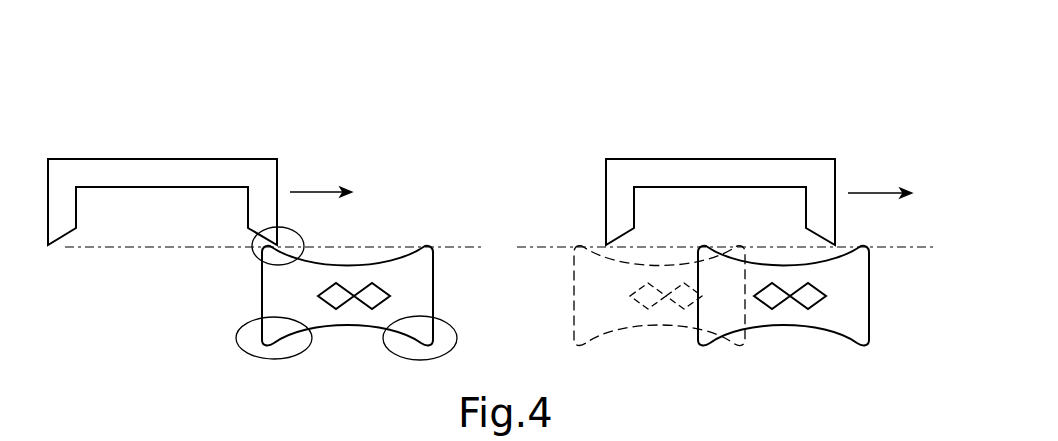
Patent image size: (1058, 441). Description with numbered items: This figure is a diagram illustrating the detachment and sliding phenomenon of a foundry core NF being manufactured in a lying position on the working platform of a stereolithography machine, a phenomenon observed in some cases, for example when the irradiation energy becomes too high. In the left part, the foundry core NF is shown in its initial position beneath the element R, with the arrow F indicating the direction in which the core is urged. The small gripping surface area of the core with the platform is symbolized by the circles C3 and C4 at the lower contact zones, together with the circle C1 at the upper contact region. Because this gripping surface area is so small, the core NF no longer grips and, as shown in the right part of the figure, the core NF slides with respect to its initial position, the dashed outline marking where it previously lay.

The rail / guide bracket R is at (163, 167).
The direction of movement (force) F is at (601, 178).
The foundry core NF is at (357, 273).
The first contact point C1 is at (262, 257).
The circle symbolizing gripping surface area C3 is at (264, 358).
The circle symbolizing gripping surface area C4 is at (408, 358).